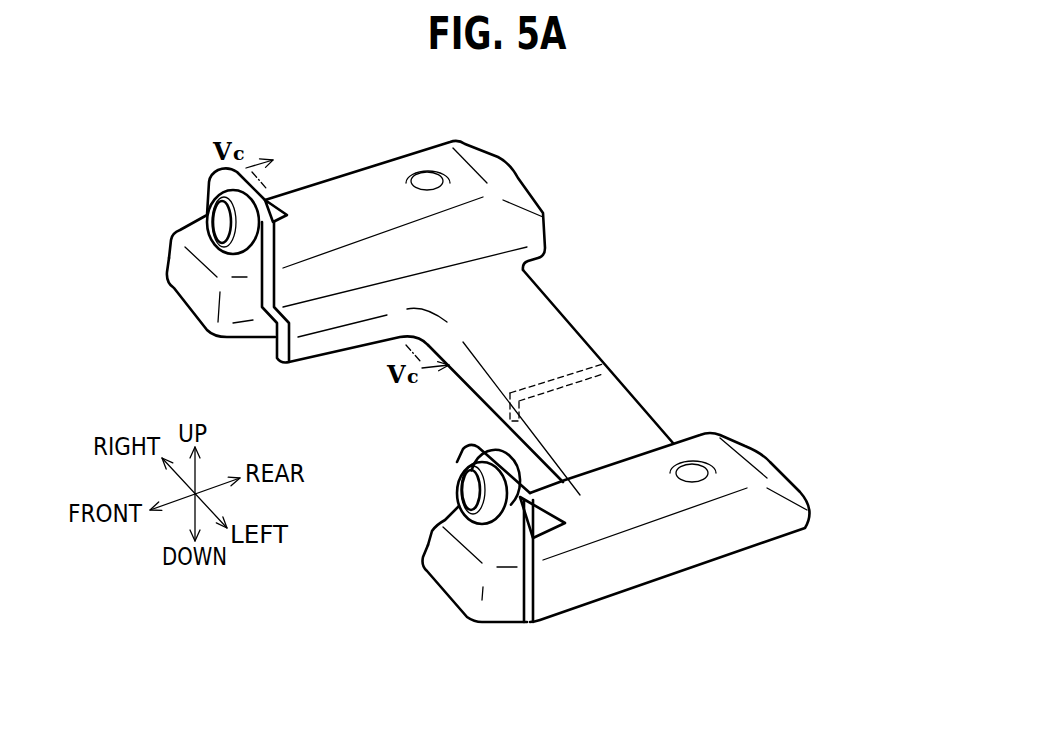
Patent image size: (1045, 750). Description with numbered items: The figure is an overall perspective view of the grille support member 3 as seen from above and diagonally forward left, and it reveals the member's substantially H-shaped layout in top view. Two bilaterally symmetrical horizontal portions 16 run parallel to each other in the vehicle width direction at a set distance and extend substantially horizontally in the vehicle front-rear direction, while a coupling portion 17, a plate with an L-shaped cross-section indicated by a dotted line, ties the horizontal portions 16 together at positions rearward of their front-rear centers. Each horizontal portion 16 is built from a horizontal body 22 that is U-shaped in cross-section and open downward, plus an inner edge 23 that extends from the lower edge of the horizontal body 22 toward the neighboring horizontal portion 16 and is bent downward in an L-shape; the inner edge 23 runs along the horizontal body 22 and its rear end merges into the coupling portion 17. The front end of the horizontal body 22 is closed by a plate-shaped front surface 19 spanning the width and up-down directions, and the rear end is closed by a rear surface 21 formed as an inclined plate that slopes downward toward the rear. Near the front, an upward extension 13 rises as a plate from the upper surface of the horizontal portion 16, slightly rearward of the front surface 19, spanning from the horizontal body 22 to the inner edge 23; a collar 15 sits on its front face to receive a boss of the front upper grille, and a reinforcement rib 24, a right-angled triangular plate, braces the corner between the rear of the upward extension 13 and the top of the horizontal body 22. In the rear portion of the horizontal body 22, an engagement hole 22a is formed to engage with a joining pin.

The grille support member 3 is at (638, 215).
The upward extension 13 is at (216, 194).
The collar 15 is at (222, 212).
The horizontal portion 16 is at (348, 112).
The coupling portion 17 is at (610, 411).
The front surface 19 is at (192, 285).
The rear surface 21 is at (503, 180).
The horizontal body 22 is at (353, 197).
The engagement hole 22a is at (429, 180).
The inner edge 23 is at (370, 305).
The reinforcement rib 24 is at (287, 215).